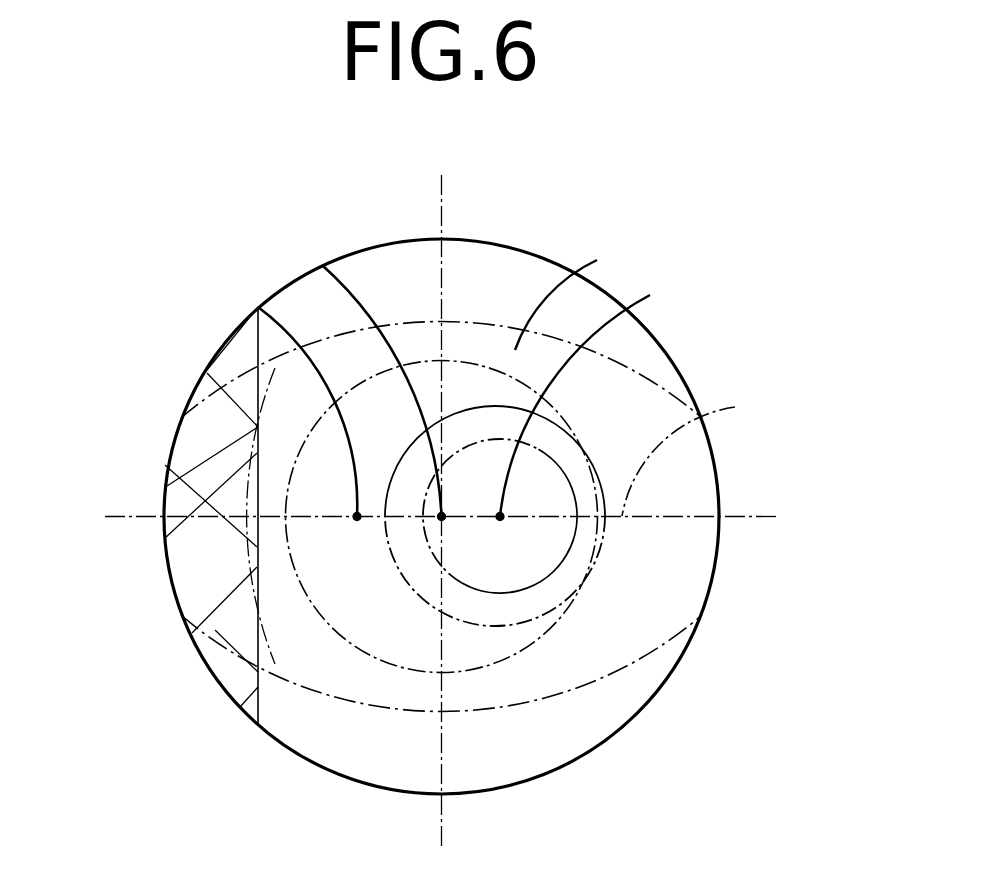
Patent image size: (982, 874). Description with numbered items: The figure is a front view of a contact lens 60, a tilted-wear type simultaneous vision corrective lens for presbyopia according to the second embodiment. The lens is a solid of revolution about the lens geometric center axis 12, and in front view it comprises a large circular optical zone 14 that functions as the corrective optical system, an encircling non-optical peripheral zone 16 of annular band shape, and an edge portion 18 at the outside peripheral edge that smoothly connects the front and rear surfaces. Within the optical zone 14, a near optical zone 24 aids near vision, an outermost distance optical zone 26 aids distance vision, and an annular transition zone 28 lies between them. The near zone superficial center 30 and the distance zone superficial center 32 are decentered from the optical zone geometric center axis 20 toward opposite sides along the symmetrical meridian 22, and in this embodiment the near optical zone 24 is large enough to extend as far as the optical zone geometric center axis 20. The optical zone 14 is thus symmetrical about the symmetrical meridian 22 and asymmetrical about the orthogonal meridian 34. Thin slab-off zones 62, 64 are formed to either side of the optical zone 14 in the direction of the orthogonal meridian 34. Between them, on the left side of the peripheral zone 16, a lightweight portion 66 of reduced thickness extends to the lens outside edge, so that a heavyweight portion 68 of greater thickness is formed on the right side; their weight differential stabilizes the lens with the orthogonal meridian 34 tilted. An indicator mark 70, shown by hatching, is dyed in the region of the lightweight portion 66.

The lens geometric center axis 12 is at (322, 265).
The optical zone 14 is at (587, 413).
The peripheral zone 16 is at (599, 259).
The edge portion 18 is at (512, 247).
The optical zone geometric center axis 20 is at (382, 390).
The symmetrical meridian 22 is at (696, 453).
The near optical zone 24 is at (515, 537).
The distance optical zone 26 is at (385, 618).
The transition zone 28 is at (502, 612).
The near zone superficial center 30 is at (653, 293).
The distance zone superficial center 32 is at (258, 307).
The orthogonal meridian 34 is at (442, 210).
The contact lens 60 is at (750, 211).
The slab-off zone 62 is at (400, 258).
The slab-off zone 64 is at (398, 752).
The lightweight portion 66 is at (210, 447).
The heavyweight portion 68 is at (686, 503).
The indicator mark 70 is at (192, 498).